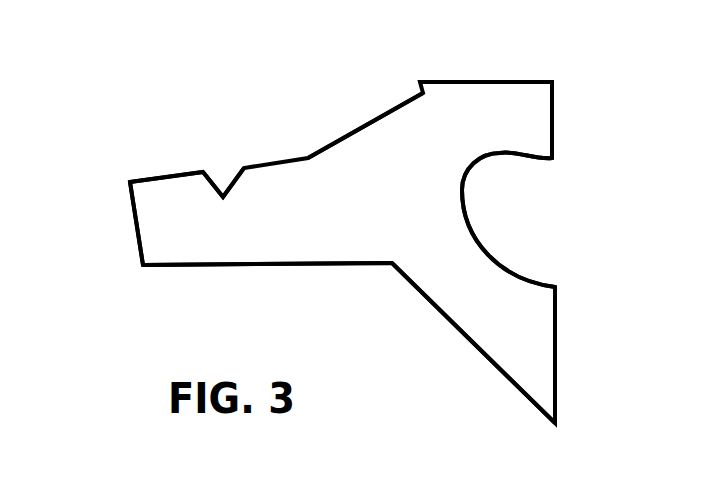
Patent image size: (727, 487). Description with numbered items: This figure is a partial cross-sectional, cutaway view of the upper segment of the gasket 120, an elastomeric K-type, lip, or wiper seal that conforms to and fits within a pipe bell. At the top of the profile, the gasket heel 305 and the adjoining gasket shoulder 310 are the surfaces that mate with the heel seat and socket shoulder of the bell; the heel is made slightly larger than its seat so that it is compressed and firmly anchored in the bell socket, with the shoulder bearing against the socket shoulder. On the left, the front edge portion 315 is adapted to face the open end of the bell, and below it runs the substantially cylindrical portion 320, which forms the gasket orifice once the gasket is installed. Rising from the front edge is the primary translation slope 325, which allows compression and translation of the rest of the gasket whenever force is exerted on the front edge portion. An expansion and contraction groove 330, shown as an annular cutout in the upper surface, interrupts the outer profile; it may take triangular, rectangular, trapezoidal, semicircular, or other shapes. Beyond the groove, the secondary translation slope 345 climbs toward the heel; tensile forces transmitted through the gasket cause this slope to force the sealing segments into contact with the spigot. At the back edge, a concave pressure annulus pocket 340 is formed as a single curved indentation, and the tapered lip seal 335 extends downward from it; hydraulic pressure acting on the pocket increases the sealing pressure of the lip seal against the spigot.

The gasket 120 is at (270, 120).
The gasket heel 305 is at (467, 80).
The gasket shoulder 310 is at (553, 132).
The front edge portion 315 is at (135, 220).
The substantially cylindrical portion 320 is at (208, 267).
The primary translation slope 325 is at (165, 176).
The expansion and contraction groove 330 is at (223, 188).
The lip seal 335 is at (507, 357).
The pressure annulus pocket 340 is at (470, 215).
The secondary translation slope 345 is at (350, 132).